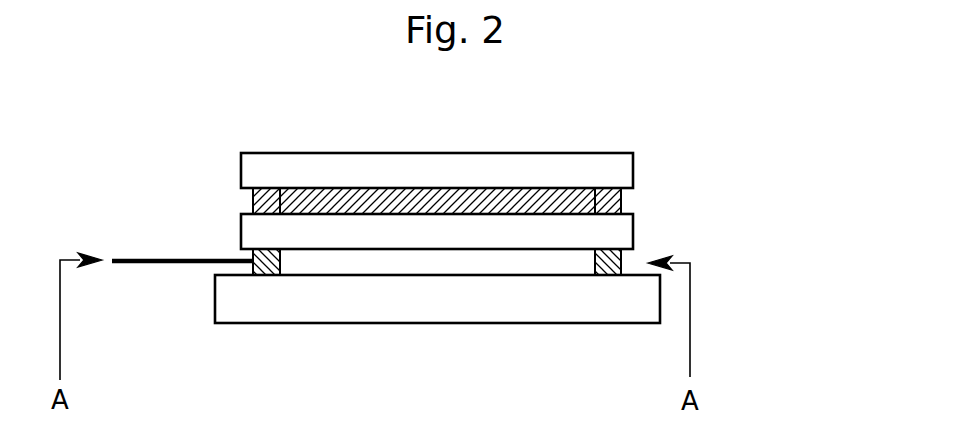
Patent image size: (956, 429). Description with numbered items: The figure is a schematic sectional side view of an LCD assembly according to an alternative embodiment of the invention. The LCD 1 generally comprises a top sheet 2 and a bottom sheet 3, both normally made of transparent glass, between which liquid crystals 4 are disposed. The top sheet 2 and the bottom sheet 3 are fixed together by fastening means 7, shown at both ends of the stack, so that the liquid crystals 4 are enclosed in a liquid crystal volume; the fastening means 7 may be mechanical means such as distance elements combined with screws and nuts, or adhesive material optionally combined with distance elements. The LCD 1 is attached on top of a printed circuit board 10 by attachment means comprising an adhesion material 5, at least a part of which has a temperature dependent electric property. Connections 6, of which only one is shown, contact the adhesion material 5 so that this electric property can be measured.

The LCD 1 is at (708, 175).
The top sheet 2 is at (372, 168).
The bottom sheet 3 is at (497, 240).
The liquid crystals 4 is at (495, 196).
The adhesion material 5 is at (261, 276).
The connections 6 is at (163, 258).
The fastening means 7 is at (262, 196).
The printed circuit board 10 is at (380, 300).